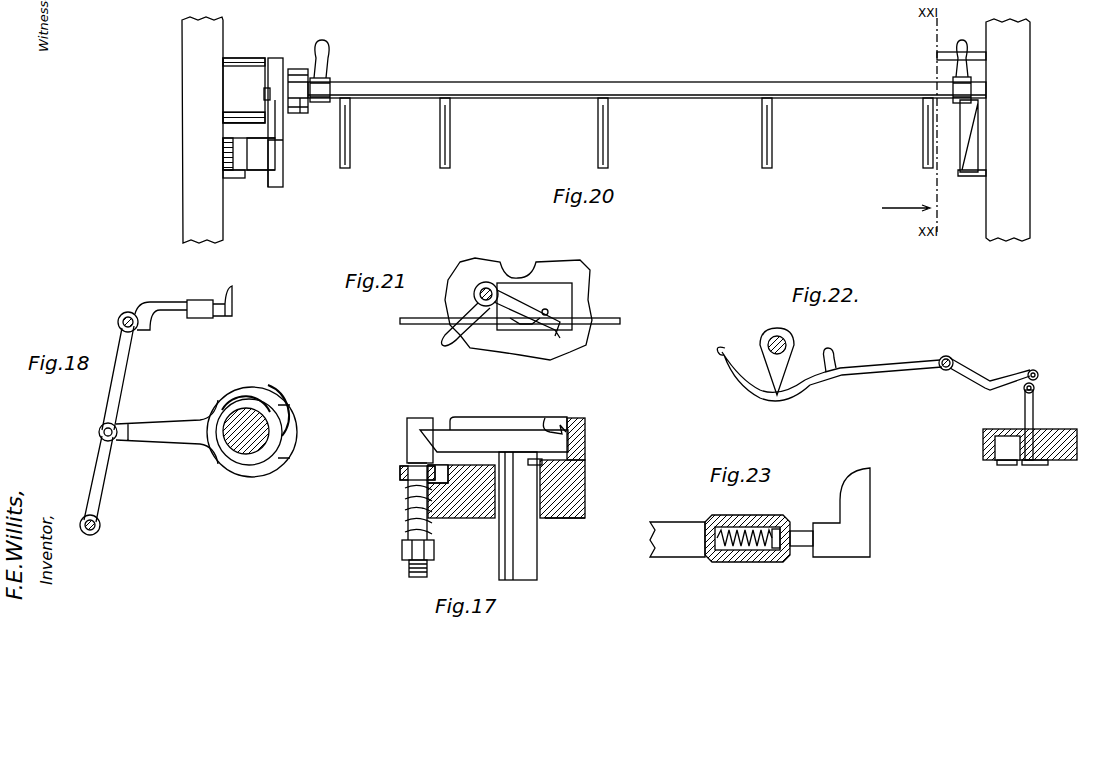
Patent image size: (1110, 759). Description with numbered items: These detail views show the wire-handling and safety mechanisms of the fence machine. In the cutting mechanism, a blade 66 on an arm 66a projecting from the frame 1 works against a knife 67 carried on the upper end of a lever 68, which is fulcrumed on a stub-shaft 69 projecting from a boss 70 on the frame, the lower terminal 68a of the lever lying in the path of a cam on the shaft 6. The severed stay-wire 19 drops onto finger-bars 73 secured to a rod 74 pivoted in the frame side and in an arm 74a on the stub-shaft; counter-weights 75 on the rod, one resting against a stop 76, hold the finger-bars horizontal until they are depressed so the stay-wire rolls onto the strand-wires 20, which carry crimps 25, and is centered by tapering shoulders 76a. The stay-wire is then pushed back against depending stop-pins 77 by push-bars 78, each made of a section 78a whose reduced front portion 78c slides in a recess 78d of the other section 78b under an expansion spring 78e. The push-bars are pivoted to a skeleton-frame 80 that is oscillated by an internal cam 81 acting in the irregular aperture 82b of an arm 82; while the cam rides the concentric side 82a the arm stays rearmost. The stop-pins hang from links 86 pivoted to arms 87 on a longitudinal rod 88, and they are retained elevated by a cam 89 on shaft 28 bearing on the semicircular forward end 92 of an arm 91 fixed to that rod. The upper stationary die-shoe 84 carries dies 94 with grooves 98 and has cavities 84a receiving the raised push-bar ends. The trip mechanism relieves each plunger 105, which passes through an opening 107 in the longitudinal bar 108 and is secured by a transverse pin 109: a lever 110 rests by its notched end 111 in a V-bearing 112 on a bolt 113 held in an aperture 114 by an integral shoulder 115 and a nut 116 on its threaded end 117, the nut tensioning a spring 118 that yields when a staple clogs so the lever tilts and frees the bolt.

In FIG. 20, the frame beam 1 is at (182, 126).
In FIG. 21, the frame beam 1 is at (465, 274).
In FIG. 18, the shaft 6 is at (250, 452).
In FIG. 21, the stay-wire 19 is at (548, 312).
In FIG. 21, the strand-wire 20 is at (605, 318).
In FIG. 21, the crimp 25 is at (520, 325).
In FIG. 22, the shaft 28 is at (776, 336).
In FIG. 20, the blade 66 is at (278, 133).
In FIG. 20, the arm 66a is at (249, 154).
In FIG. 20, the knife 67 is at (264, 96).
In FIG. 20, the lever 68 is at (273, 58).
In FIG. 20, the lower terminal 68a is at (284, 178).
In FIG. 20, the stub-shaft 69 is at (305, 110).
In FIG. 20, the boss 70 is at (244, 90).
In FIG. 20, the finger-bar 73 is at (450, 145).
In FIG. 21, the finger-bar 73 is at (552, 340).
In FIG. 20, the rod 74 is at (637, 86).
In FIG. 21, the rod 74 is at (474, 298).
In FIG. 20, the arm 74a is at (297, 69).
In FIG. 20, the counter-weight 75 is at (325, 48).
In FIG. 21, the counter-weight 75 is at (448, 343).
In FIG. 20, the stop 76 is at (937, 60).
In FIG. 20, the tapering shoulder 76a is at (236, 178).
In FIG. 21, the tapering shoulder 76a is at (572, 283).
In FIG. 22, the stop-pin 77 is at (1034, 404).
In FIG. 18, the push-bar 78 is at (190, 302).
In FIG. 23, the push-bar 78 is at (760, 530).
In FIG. 23, the section 78a is at (841, 512).
In FIG. 23, the section 78b is at (677, 539).
In FIG. 23, the reduced front portion 78c is at (802, 531).
In FIG. 23, the recess 78d is at (736, 527).
In FIG. 23, the expansion spring 78e is at (745, 550).
In FIG. 18, the skeleton-frame 80 is at (124, 372).
In FIG. 18, the internal cam 81 is at (254, 390).
In FIG. 18, the arm 82 is at (285, 404).
In FIG. 18, the concentric side 82a is at (297, 432).
In FIG. 18, the irregular aperture 82b is at (278, 470).
In FIG. 22, the upper stationary die-shoe 84 is at (1078, 443).
In FIG. 22, the cavity 84a is at (1003, 450).
In FIG. 22, the link 86 is at (1040, 378).
In FIG. 22, the arm 87 is at (992, 385).
In FIG. 22, the longitudinal rod 88 is at (948, 357).
In FIG. 22, the cam 89 is at (777, 398).
In FIG. 22, the arm 91 is at (865, 370).
In FIG. 22, the semicircular forward end 92 is at (825, 350).
In FIG. 22, the die 94 is at (1048, 465).
In FIG. 22, the groove 98 is at (1022, 462).
In FIG. 17, the rod 105 is at (530, 564).
In FIG. 17, the opening 107 is at (548, 518).
In FIG. 17, the longitudinal bar 108 is at (575, 495).
In FIG. 17, the transverse pin 109 is at (542, 462).
In FIG. 17, the lever 110 is at (480, 438).
In FIG. 17, the notched end 111 is at (546, 418).
In FIG. 17, the V-bearing 112 is at (585, 426).
In FIG. 17, the bolt 113 is at (407, 450).
In FIG. 17, the aperture 114 is at (400, 474).
In FIG. 17, the integral shoulder 115 is at (408, 462).
In FIG. 17, the nut 116 is at (402, 546).
In FIG. 17, the threaded end 117 is at (409, 568).
In FIG. 17, the spring 118 is at (404, 516).